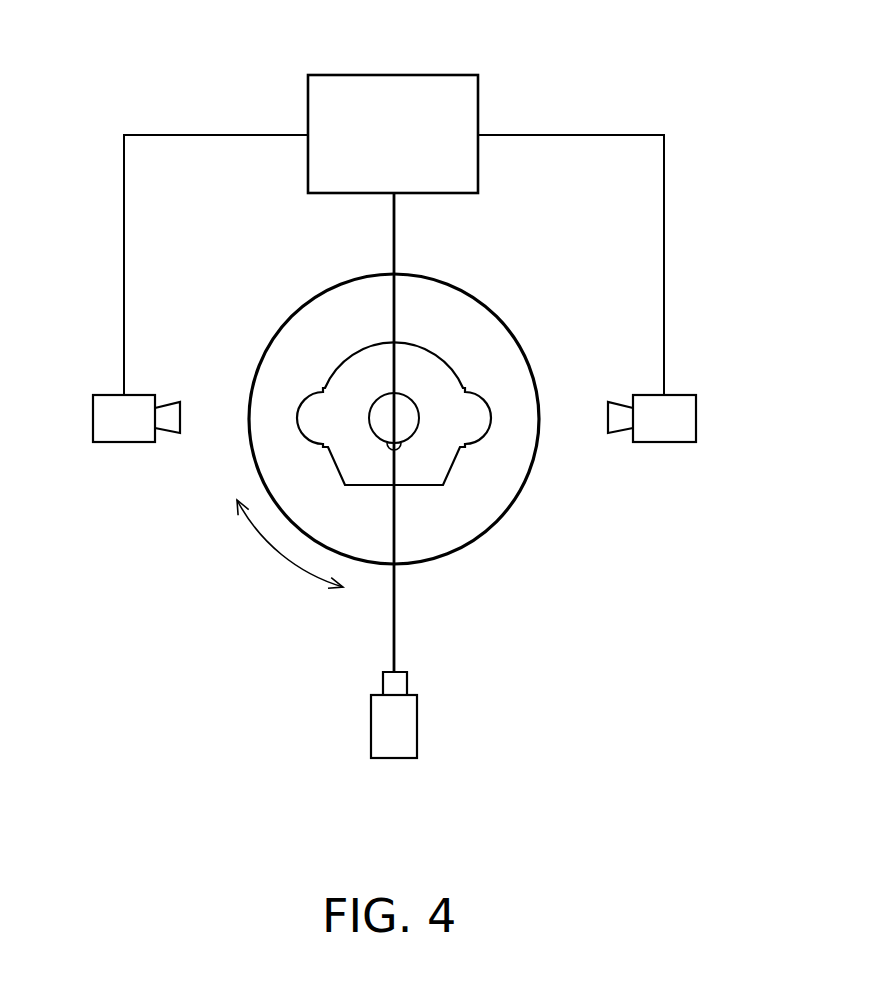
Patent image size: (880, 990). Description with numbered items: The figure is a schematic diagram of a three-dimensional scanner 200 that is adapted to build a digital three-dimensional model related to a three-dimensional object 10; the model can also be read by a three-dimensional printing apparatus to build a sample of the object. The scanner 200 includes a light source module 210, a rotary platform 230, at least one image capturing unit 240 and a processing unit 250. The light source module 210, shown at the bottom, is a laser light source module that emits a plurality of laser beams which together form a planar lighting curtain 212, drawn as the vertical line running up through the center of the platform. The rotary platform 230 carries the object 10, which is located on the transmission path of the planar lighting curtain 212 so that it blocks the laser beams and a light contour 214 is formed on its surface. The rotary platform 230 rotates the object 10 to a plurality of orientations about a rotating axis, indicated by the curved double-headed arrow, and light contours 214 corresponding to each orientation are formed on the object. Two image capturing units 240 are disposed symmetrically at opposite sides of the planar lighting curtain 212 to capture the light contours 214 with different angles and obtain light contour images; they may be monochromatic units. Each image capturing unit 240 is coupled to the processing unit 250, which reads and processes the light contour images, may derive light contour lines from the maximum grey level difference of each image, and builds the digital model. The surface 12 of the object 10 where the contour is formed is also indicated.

The processing unit 250 is at (428, 75).
The image capturing unit 240 is at (93, 416).
The rotary platform 230 is at (282, 382).
The planar lighting curtain 212 is at (398, 609).
The 3D object 10 is at (437, 352).
The light contour 214 is at (395, 415).
The bottom surface of workpiece 12 is at (415, 490).
The light source module 210 is at (417, 725).
The 3D scanner 200 is at (746, 811).